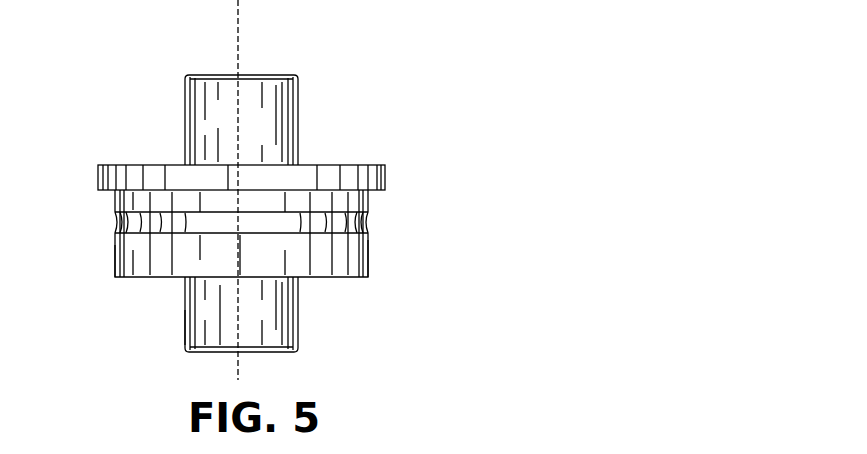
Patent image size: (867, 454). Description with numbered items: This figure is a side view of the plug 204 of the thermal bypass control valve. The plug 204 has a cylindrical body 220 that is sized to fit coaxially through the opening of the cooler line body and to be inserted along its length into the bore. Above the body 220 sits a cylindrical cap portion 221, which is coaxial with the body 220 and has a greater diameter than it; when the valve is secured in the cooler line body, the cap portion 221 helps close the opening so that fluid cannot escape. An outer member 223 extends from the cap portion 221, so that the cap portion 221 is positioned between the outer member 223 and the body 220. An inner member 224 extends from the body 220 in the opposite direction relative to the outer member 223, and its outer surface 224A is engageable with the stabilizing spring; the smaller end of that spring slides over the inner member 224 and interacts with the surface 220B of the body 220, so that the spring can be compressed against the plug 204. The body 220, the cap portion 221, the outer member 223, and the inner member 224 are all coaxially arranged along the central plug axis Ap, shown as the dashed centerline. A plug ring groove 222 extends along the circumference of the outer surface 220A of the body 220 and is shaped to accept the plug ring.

The plug 204 is at (460, 97).
The cylindrical body 220 is at (115, 258).
The outer surface of the body 220A is at (369, 262).
The surface of the body 220B is at (124, 278).
The cap portion 221 is at (98, 180).
The plug ring groove 222 is at (369, 222).
The outer member 223 is at (298, 110).
The inner member 224 is at (299, 352).
The outer surface of the inner member 224A is at (184, 330).
The central plug axis Ap is at (238, 50).